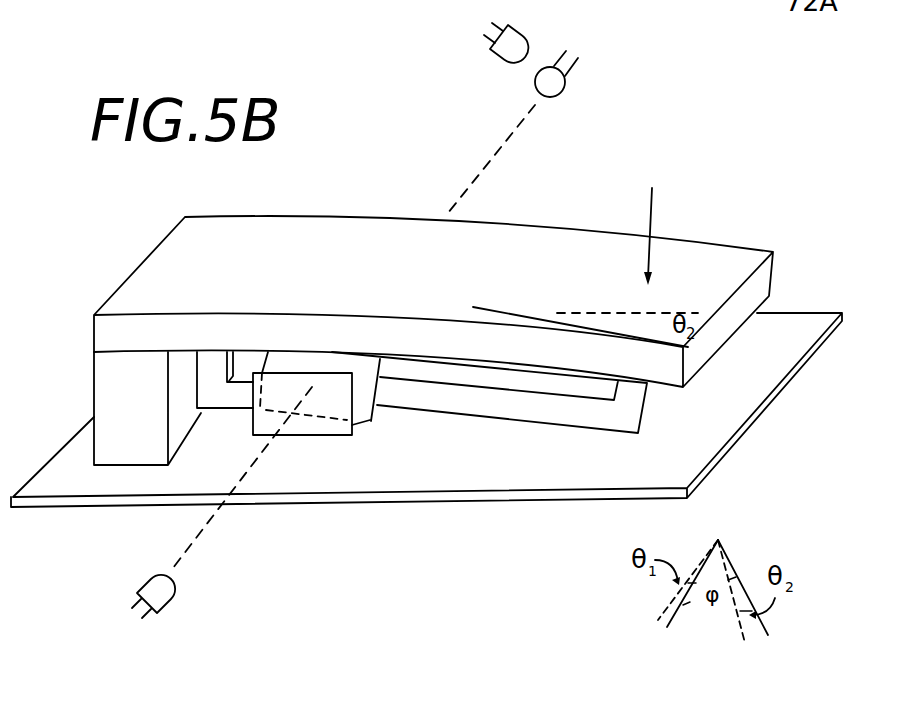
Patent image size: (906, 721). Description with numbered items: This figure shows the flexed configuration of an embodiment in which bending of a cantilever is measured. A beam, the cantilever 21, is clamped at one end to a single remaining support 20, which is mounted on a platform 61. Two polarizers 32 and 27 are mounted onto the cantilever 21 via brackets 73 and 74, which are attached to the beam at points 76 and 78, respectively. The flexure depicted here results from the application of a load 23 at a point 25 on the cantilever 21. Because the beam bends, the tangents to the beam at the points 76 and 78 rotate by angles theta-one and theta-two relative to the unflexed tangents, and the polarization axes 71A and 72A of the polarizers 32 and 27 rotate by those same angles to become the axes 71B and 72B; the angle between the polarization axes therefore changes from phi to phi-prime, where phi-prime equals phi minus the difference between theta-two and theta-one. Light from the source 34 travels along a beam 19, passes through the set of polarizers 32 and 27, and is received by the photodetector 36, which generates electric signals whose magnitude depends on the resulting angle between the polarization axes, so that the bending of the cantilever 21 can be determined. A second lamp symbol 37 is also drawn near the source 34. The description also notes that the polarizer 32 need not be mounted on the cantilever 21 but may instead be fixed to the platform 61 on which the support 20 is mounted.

The light beam 19 is at (492, 159).
The support 20 is at (147, 408).
The cantilever 21 is at (433, 301).
The load 23 is at (649, 217).
The point 25 is at (627, 291).
The polarizer 27 is at (330, 411).
The polarizer 32 is at (281, 402).
The source 34 is at (574, 74).
The photodetector 36 is at (222, 509).
The light source 37 is at (517, 31).
The platform 61 is at (426, 410).
The polarization axis 71A is at (671, 601).
The polarization axis 71B is at (659, 583).
The polarization axis 72A is at (775, 600).
The polarization axis 72B is at (738, 612).
The bracket 73 is at (225, 380).
The bracket 74 is at (489, 392).
The point 76 is at (225, 352).
The point 78 is at (580, 341).